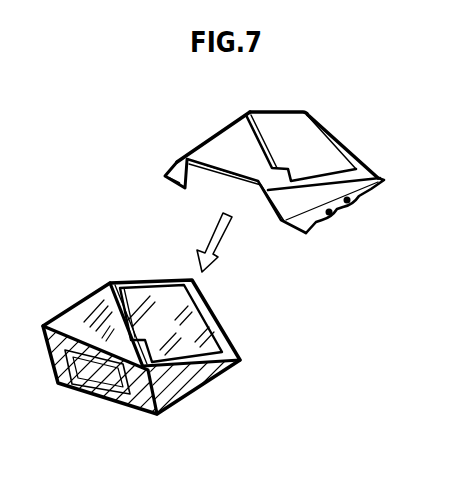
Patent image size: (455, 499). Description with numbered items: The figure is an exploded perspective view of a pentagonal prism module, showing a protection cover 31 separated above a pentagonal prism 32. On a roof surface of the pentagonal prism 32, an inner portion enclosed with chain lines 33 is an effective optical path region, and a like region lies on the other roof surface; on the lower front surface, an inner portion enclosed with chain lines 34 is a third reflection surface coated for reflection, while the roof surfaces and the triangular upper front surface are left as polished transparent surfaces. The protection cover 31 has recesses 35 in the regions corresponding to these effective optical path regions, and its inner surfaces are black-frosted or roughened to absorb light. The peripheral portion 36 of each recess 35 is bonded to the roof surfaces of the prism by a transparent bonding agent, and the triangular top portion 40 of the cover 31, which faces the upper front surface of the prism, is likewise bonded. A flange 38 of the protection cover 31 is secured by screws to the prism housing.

The protection cover 31 is at (207, 137).
The recesses 35 is at (310, 150).
The flange 38 is at (383, 182).
The triangular top portion 40 is at (219, 150).
The peripheral portion 36 is at (278, 187).
The pentagonal prism 32 is at (272, 356).
The chain lines 33 is at (193, 323).
The chain lines 34 is at (82, 390).